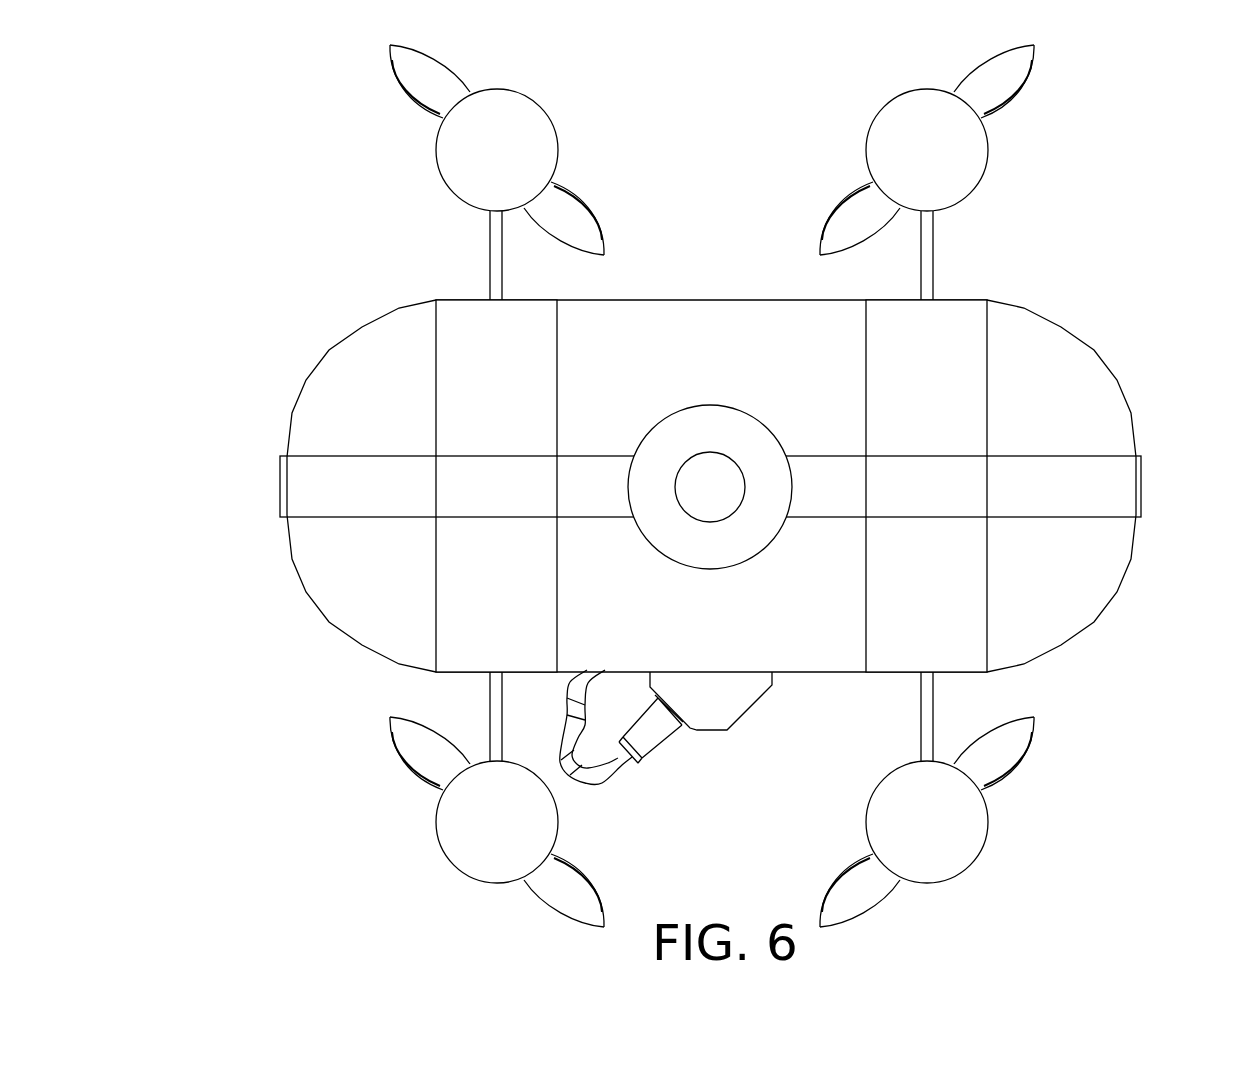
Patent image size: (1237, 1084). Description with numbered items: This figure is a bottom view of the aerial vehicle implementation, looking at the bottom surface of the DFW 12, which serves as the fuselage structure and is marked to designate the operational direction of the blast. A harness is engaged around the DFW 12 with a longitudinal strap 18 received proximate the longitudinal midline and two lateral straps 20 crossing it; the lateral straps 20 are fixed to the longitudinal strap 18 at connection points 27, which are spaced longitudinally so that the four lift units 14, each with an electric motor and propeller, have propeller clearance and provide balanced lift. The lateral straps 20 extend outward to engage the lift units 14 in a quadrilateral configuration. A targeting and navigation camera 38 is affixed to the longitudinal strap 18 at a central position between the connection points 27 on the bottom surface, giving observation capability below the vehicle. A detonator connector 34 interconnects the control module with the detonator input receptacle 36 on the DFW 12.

The DFW 12 is at (1078, 403).
The lift units 14 is at (443, 177).
The longitudinal strap 18 is at (395, 477).
The lateral straps 20 is at (487, 595).
The connection points 27 is at (503, 487).
The detonator connector 34 is at (602, 777).
The detonator input receptacle 36 is at (682, 723).
The targeting and navigation camera 38 is at (703, 437).